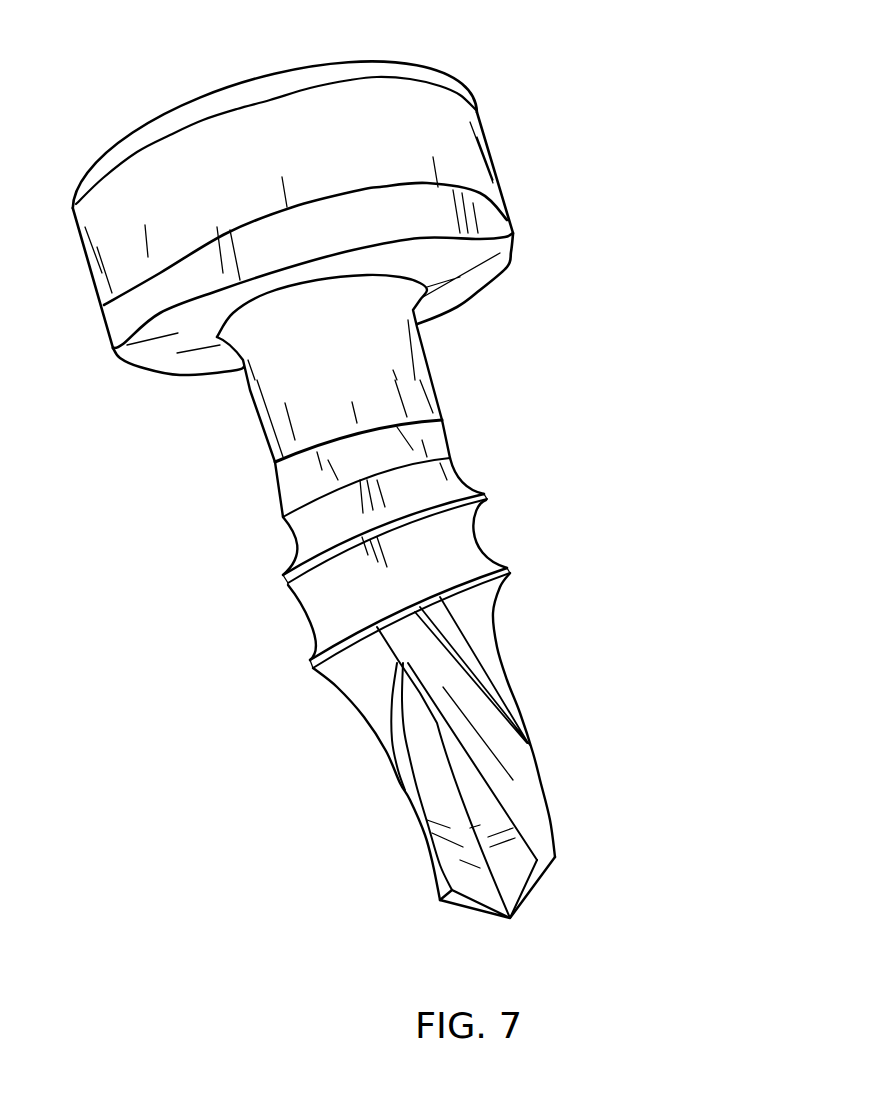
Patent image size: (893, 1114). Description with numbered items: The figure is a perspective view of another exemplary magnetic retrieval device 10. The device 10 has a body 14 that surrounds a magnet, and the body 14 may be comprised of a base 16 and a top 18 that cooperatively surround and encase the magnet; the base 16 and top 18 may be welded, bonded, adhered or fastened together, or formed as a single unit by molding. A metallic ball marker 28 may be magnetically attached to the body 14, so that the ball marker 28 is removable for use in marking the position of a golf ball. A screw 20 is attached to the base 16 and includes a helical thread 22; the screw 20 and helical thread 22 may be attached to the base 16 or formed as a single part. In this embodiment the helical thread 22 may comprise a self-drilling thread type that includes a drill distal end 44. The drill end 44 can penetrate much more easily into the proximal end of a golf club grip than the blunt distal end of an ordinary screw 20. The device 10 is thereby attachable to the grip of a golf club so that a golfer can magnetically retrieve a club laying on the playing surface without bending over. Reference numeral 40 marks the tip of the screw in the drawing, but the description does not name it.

The magnetic retrieval device 10 is at (400, 471).
The body 14 is at (342, 189).
The base 16 is at (500, 233).
The top 18 is at (460, 131).
The screw 20 is at (478, 546).
The helical thread 22 is at (513, 570).
The ball marker 28 is at (382, 58).
The drill tip 40 is at (510, 919).
The drill distal end 44 is at (518, 863).